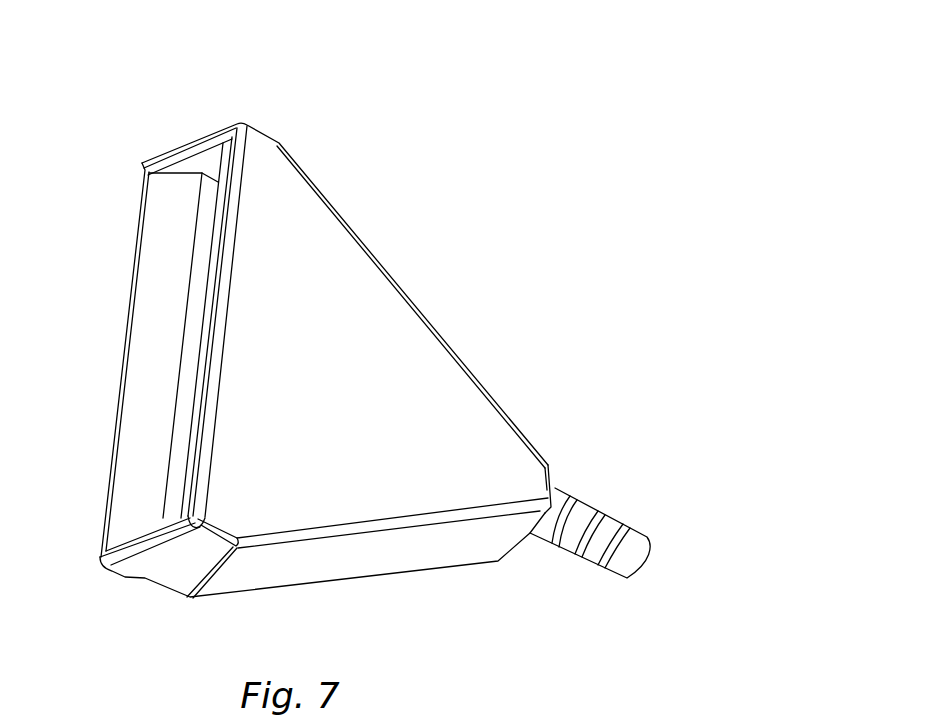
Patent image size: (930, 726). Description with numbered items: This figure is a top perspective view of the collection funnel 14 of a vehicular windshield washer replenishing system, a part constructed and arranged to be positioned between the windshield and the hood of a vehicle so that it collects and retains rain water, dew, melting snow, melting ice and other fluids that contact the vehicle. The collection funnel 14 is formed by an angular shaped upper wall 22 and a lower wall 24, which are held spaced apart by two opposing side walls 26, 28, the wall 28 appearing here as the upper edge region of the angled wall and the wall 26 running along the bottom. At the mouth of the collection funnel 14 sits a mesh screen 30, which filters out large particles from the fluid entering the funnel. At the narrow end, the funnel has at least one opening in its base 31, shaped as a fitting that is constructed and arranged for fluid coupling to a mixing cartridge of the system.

The collection funnel 14 is at (430, 163).
The angular shaped upper wall 22 is at (410, 325).
The lower wall 24 is at (117, 390).
The side wall 26 is at (378, 563).
The side wall 28 is at (475, 375).
The mesh screen 30 is at (176, 205).
The base 31 is at (640, 563).